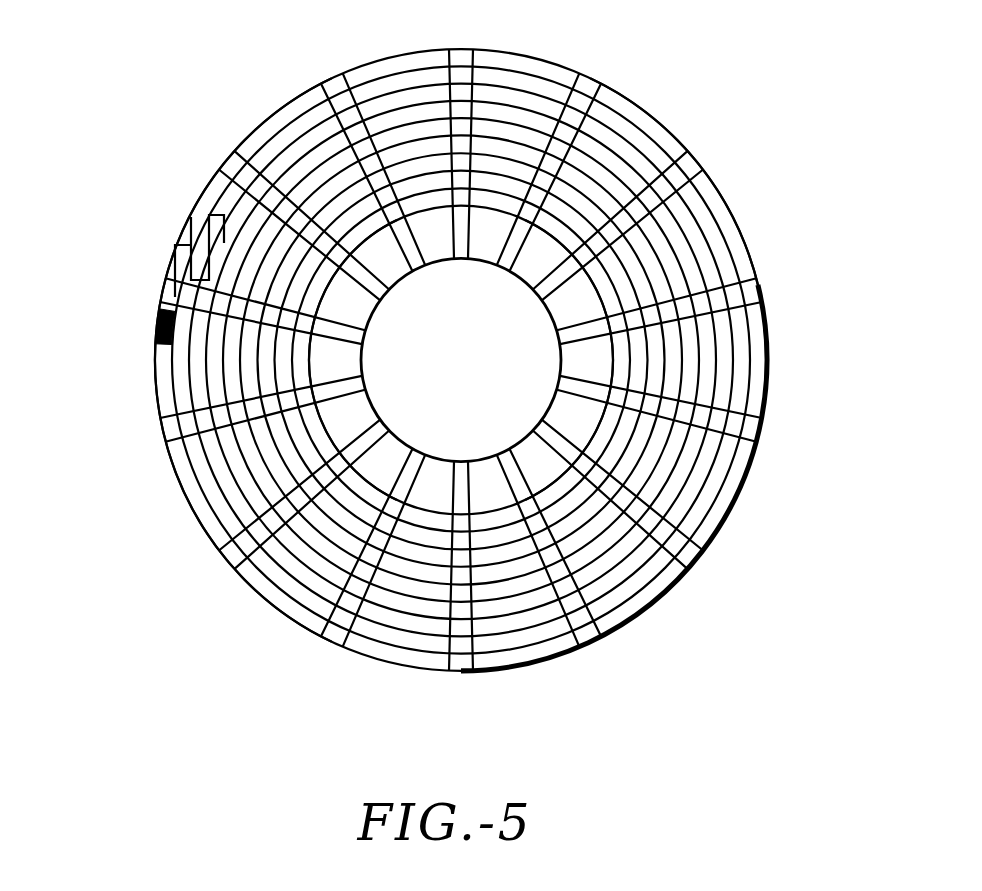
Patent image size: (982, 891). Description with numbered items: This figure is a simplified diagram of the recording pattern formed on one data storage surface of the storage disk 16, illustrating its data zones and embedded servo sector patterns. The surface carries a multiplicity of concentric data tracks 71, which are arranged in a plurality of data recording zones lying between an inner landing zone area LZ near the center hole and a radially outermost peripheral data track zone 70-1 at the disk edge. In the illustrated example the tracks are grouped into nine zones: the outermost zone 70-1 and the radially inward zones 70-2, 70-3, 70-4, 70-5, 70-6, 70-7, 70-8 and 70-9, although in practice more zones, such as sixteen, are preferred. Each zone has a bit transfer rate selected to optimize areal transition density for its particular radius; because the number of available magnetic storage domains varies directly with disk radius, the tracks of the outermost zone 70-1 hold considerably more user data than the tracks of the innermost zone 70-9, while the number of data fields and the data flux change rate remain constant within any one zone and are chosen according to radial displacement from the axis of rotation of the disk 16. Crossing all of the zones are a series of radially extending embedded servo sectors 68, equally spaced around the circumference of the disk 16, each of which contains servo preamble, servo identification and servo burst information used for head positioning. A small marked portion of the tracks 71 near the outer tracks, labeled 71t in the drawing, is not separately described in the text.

The storage disk 16 is at (128, 603).
The embedded servo sectors 68 is at (460, 50).
The outermost data zone 70-1 is at (648, 118).
The data zone 70-2 is at (718, 240).
The data zone 70-3 is at (723, 363).
The data zone 70-4 is at (683, 470).
The data zone 70-5 is at (604, 543).
The data zone 70-6 is at (340, 545).
The data zone 70-7 is at (283, 448).
The data zone 70-8 is at (283, 363).
The innermost data zone 70-9 is at (318, 283).
The landing zone LZ is at (375, 262).
The data tracks 71 is at (157, 325).
The timing track pattern 71t is at (172, 252).